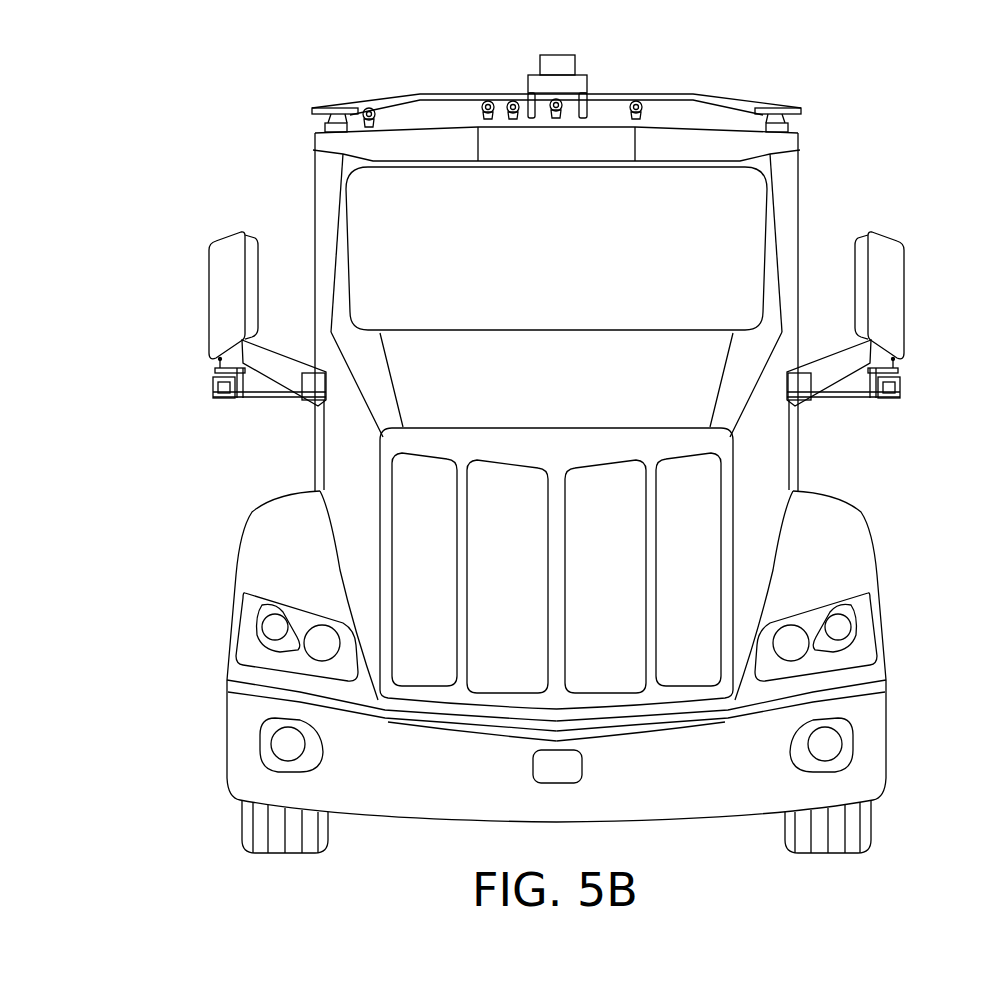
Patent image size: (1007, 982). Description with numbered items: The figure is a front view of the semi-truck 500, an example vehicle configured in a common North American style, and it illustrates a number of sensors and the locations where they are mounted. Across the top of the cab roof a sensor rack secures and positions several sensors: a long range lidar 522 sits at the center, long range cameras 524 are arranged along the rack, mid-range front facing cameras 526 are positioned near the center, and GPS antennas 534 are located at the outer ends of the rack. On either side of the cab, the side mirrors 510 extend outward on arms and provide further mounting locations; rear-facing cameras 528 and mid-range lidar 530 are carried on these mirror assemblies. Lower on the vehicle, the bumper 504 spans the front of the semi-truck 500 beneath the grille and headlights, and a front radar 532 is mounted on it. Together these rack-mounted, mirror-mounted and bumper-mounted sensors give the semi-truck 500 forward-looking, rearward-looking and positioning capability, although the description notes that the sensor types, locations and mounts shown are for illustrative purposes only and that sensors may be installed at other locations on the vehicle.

The semi-truck 500 is at (255, 72).
The bumper 504 is at (670, 797).
The side mirrors 510 is at (224, 237).
The long range lidar 522 is at (558, 64).
The long range cameras 524 is at (488, 100).
The mid-range front facing cameras 526 is at (556, 98).
The rear-facing cameras 528 is at (265, 403).
The mid-range lidar 530 is at (213, 388).
The front radar 532 is at (553, 765).
The GPS antennas 534 is at (340, 106).